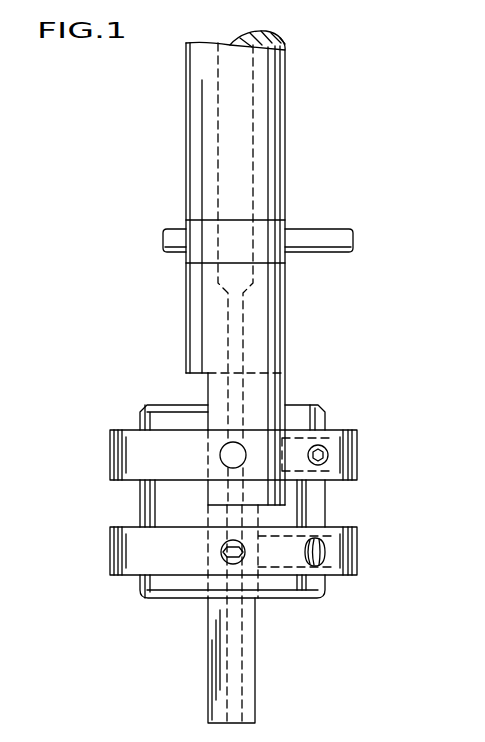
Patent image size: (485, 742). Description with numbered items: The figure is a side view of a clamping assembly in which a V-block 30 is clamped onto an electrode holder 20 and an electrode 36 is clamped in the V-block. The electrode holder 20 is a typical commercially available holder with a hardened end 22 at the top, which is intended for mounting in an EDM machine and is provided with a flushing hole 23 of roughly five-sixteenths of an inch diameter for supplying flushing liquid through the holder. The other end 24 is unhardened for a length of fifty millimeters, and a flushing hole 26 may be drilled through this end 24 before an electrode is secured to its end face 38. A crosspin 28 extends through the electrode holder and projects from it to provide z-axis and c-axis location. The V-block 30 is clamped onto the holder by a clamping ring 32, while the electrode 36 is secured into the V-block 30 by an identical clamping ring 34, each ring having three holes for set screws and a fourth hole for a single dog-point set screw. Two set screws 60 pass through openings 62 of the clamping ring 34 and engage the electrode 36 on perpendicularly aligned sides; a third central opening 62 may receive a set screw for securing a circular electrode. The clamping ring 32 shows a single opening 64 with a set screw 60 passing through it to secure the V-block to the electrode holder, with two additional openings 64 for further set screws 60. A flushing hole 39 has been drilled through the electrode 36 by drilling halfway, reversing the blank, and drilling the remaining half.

The electrode holder 20 is at (184, 118).
The hardened end 22 is at (288, 162).
The flushing hole 23 is at (253, 86).
The other end 24 is at (285, 391).
The flushing hole 26 is at (225, 312).
The crosspin 28 is at (325, 254).
The V-block 30 is at (138, 498).
The clamping ring 32 is at (360, 441).
The clamping ring 34 is at (360, 541).
The electrode 36 is at (258, 672).
The end face 38 is at (225, 508).
The flushing hole 39 is at (242, 703).
The set screw 60 is at (323, 462).
The set screw opening 62 is at (355, 565).
The set screw opening 64 is at (220, 453).